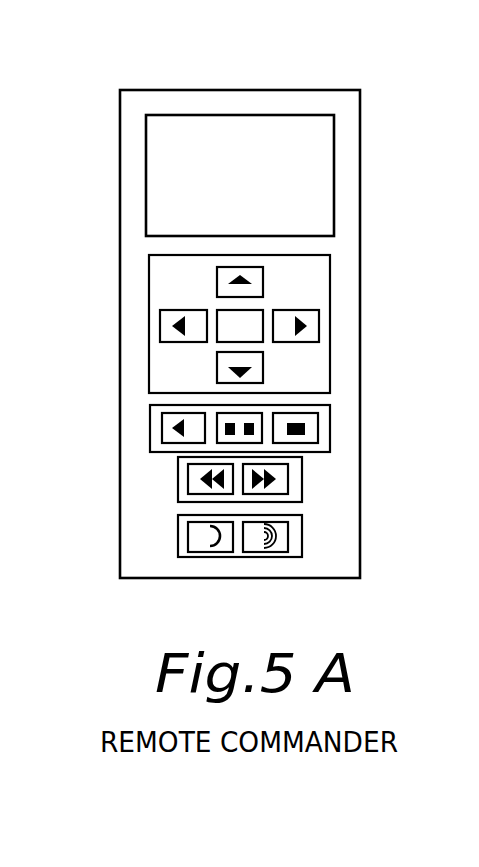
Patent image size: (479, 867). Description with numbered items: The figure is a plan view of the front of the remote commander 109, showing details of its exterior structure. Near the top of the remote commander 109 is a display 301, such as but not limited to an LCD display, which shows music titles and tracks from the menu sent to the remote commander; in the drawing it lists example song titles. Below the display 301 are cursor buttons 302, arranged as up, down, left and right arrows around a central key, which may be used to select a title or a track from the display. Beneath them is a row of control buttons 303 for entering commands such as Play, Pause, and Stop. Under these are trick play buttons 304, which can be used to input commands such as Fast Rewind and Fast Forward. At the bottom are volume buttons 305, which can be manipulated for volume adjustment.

The remote commander 109 is at (318, 90).
The display 301 is at (334, 177).
The cursor buttons 302 is at (330, 280).
The control buttons 303 is at (312, 430).
The trick play buttons 304 is at (283, 482).
The volume buttons 305 is at (283, 540).